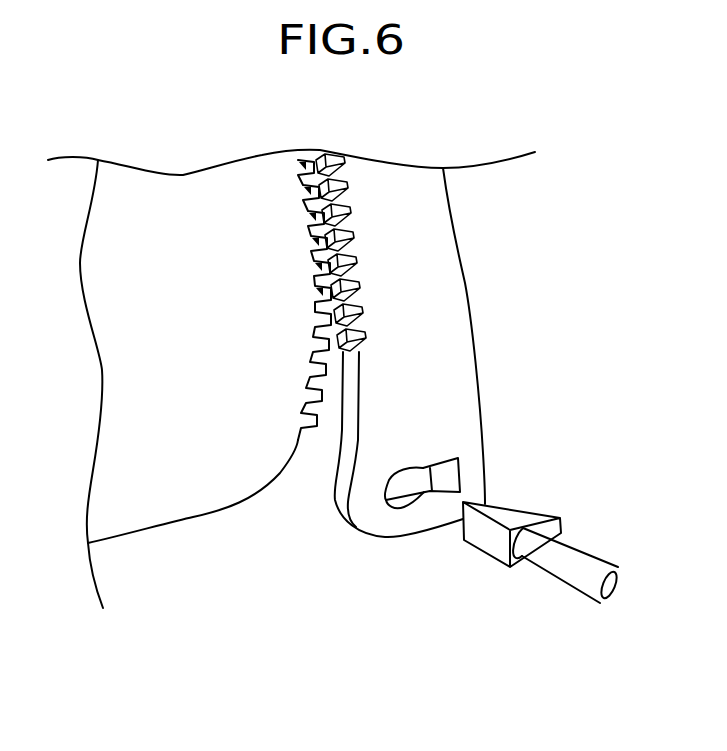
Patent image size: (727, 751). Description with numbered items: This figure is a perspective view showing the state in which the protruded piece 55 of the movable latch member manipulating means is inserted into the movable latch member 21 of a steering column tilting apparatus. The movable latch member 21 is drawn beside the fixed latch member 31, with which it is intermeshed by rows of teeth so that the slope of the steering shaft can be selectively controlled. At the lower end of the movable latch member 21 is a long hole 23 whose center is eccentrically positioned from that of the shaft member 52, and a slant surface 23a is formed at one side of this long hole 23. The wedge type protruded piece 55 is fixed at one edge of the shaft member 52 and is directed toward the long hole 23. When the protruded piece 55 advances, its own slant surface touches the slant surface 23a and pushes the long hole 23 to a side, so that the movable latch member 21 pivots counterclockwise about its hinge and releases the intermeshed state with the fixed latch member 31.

The movable latch member 21 is at (432, 285).
The fixed latch member 31 is at (197, 473).
The long hole 23 is at (429, 556).
The slant surface 23a is at (443, 478).
The protruded piece 55 is at (510, 512).
The shaft member 52 is at (585, 547).